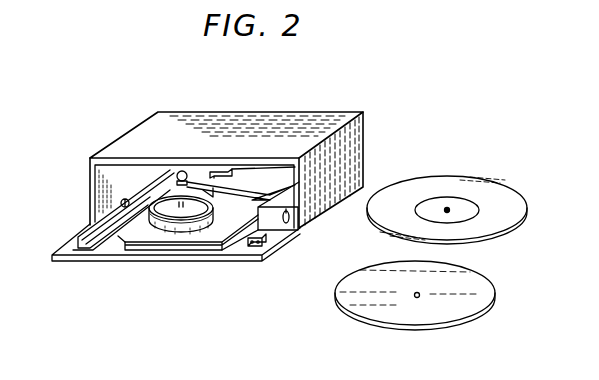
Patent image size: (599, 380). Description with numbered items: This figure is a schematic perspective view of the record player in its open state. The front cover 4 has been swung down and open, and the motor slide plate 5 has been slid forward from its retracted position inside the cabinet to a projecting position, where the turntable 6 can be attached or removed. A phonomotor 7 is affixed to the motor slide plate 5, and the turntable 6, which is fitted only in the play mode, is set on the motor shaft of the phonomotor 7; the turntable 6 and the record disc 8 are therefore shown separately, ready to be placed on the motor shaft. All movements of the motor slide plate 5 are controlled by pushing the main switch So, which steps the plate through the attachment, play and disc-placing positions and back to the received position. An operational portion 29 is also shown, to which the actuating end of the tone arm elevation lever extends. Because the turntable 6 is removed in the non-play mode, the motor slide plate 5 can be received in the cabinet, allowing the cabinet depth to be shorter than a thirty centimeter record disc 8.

The front cover 4 is at (70, 251).
The motor slide plate 5 is at (112, 241).
The phonomotor 7 is at (183, 237).
The main switch So is at (256, 248).
The operational portion 29 is at (290, 216).
The record disc 8 is at (512, 222).
The turntable 6 is at (485, 297).